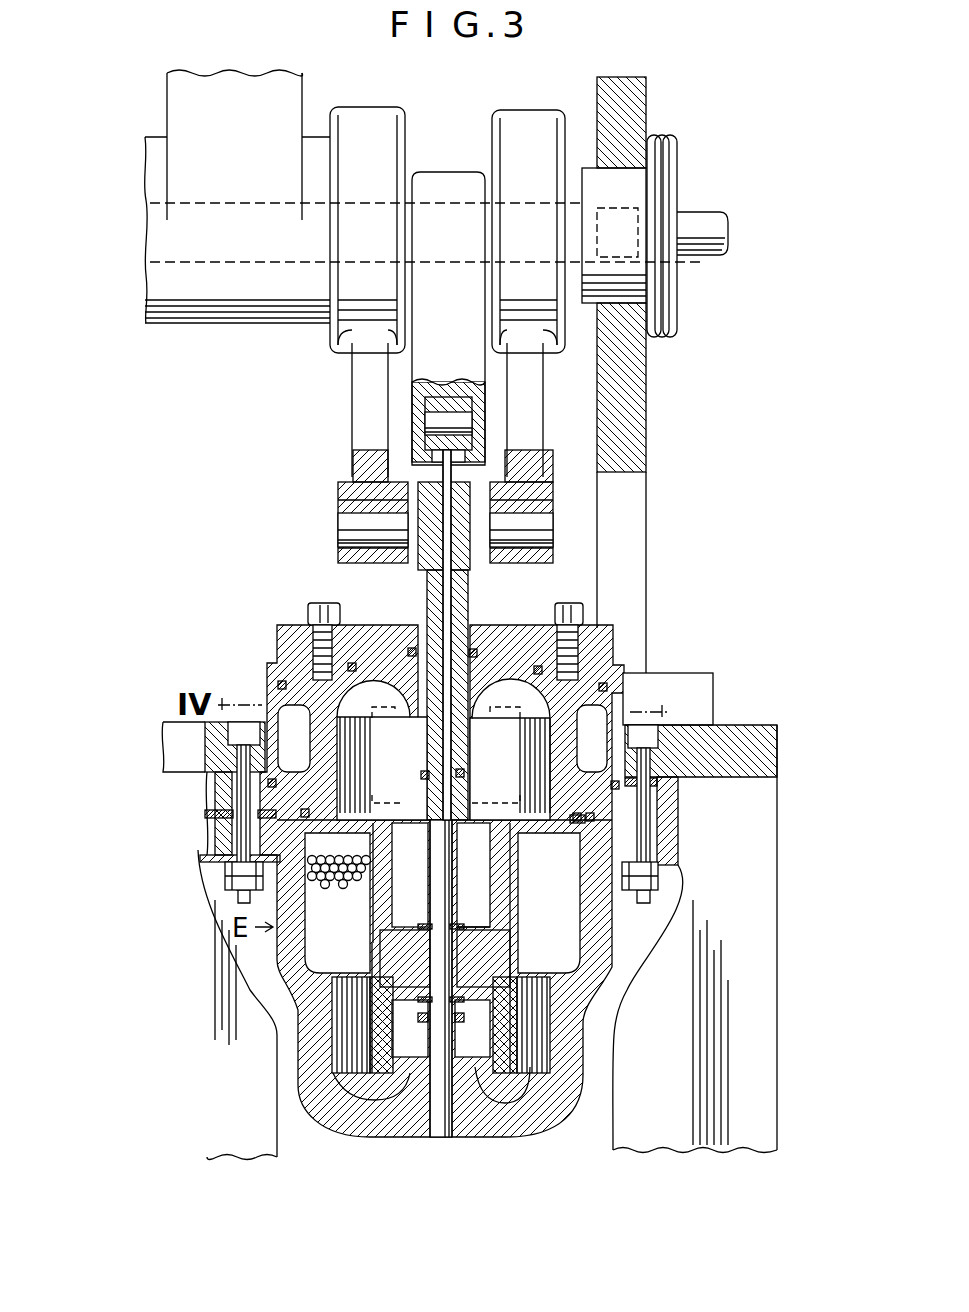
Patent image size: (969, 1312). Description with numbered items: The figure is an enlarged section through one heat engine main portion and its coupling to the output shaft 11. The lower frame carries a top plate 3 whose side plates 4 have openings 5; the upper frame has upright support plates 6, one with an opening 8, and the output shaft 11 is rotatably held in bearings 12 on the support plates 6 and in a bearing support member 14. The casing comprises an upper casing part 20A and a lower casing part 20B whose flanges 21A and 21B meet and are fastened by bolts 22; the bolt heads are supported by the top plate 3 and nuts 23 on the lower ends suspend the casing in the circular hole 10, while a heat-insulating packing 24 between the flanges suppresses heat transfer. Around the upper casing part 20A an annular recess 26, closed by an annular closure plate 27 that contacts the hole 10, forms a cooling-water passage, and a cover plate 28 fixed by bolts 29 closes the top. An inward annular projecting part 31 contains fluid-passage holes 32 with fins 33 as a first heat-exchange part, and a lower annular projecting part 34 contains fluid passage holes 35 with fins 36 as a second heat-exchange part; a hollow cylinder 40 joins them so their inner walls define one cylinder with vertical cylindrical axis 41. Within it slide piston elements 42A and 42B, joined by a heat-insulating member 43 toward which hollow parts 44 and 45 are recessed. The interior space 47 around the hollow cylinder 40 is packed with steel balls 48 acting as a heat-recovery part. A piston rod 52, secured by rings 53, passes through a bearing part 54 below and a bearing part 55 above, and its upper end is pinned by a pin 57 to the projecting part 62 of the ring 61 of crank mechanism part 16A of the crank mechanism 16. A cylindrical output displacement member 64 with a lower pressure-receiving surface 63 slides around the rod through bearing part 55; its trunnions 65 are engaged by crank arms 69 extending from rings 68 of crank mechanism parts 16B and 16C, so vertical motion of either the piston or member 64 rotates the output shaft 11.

The top plate 3 is at (720, 735).
The side plate 4 is at (770, 1015).
The opening 5 is at (278, 1116).
The upright support plate 6 is at (640, 355).
The opening 8 is at (640, 475).
The circular hole 10 is at (612, 720).
The rotating output shaft 11 is at (700, 225).
The bearing 12 is at (635, 178).
The bearing support member 14 is at (175, 100).
The crank mechanism 16 is at (352, 377).
The crank mechanism part 16A is at (447, 185).
The crank mechanism part 16B is at (370, 130).
The crank mechanism part 16C is at (522, 125).
The upper casing part 20A is at (290, 665).
The lower casing part 20B is at (565, 1110).
The flange 21A is at (215, 800).
The flange 21B is at (215, 843).
The bolt 22 is at (170, 745).
The nut 23 is at (235, 900).
The heat-insulating packing 24 is at (225, 818).
The annular recess 26 is at (285, 715).
The annular closure plate 27 is at (275, 690).
The cover plate 28 is at (480, 650).
The bolt 29 is at (320, 640).
The annular projecting part 31 is at (365, 765).
The fluid-passage hole 32 is at (352, 675).
The fin 33 is at (530, 770).
The annular projecting part 34 is at (360, 1105).
The fluid passage hole 35 is at (340, 1040).
The fin 36 is at (350, 1002).
The hollow cylinder 40 is at (505, 915).
The cylindrical axis 41 is at (517, 945).
The piston element 42A is at (510, 930).
The piston element 42B is at (540, 1020).
The heat-insulating member 43 is at (385, 965).
The hollow part 44 is at (480, 928).
The hollow part 45 is at (472, 1125).
The interior space 47 is at (300, 955).
The steel ball 48 is at (340, 892).
The piston rod 52 is at (442, 1120).
The ring 53 is at (425, 924).
The bearing part 54 is at (400, 1128).
The bearing part 55 is at (400, 650).
The pin 57 is at (415, 425).
The ring 61 is at (475, 292).
The projecting part 62 is at (390, 455).
The pressure-receiving surface 63 is at (420, 805).
The output displacement member 64 is at (420, 580).
The trunnion 65 is at (345, 525).
The ring 68 is at (405, 130).
The crank arm 69 is at (358, 400).